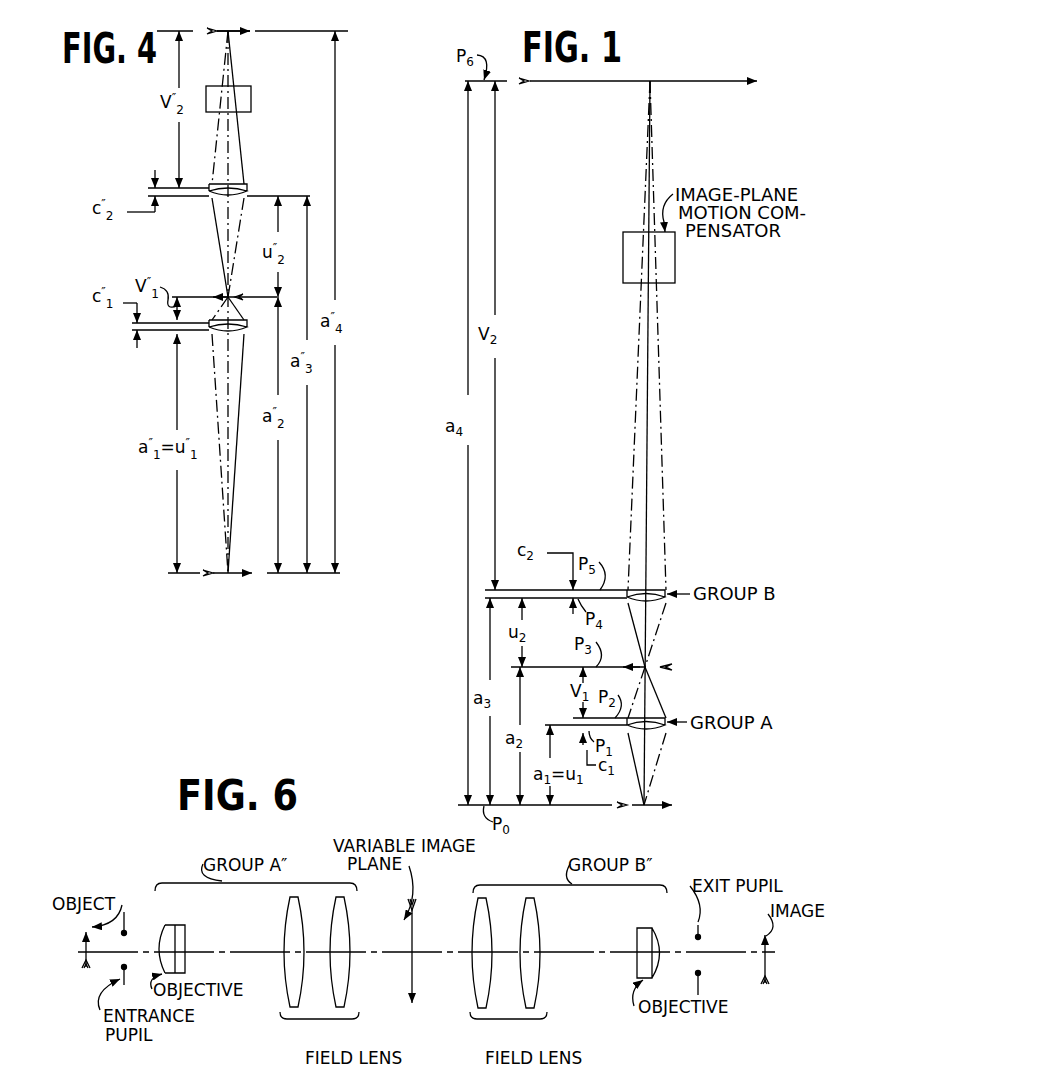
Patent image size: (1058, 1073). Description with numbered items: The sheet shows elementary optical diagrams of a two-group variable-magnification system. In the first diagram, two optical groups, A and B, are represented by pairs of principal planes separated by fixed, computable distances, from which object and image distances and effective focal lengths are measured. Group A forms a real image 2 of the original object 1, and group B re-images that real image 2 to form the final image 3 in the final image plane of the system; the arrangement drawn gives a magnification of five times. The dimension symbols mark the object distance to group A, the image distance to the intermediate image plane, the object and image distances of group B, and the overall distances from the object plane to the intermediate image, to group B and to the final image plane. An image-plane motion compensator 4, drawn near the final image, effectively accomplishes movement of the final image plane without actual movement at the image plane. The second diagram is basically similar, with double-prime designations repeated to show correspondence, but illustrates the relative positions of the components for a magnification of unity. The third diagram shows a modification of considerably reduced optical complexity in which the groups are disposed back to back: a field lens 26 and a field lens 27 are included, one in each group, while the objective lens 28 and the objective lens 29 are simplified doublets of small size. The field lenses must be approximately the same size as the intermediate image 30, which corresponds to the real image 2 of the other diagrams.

In FIG. 4, the original object 1 is at (228, 576).
In FIG. 1, the original object 1 is at (651, 806).
In FIG. 4, the real image 2 is at (232, 295).
In FIG. 1, the real image 2 is at (647, 665).
In FIG. 4, the final image 3 is at (232, 31).
In FIG. 1, the final image 3 is at (567, 83).
In FIG. 4, the image-plane motion compensator 4 is at (251, 97).
In FIG. 1, the image-plane motion compensator 4 is at (623, 258).
In FIG. 6, the field lens 26 is at (315, 1019).
In FIG. 6, the field lens 27 is at (505, 1019).
In FIG. 6, the objective lens 28 is at (180, 925).
In FIG. 6, the objective lens 29 is at (642, 928).
In FIG. 6, the intermediate image 30 is at (415, 956).